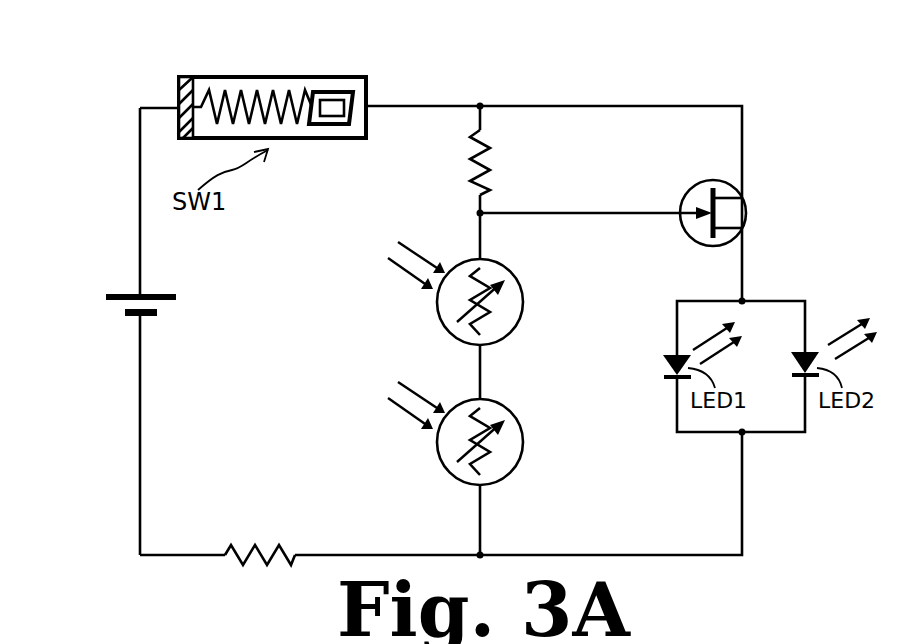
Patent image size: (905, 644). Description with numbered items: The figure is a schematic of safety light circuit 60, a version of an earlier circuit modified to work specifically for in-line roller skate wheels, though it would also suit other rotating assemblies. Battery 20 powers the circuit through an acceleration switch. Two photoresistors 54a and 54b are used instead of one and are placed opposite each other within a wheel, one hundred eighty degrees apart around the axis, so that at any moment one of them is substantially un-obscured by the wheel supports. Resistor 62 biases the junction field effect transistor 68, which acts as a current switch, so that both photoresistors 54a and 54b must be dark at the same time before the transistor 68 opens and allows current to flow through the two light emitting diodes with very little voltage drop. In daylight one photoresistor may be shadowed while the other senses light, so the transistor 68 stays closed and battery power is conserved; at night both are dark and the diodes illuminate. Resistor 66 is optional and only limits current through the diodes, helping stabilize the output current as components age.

The circuit 60 is at (562, 84).
The battery 20 is at (118, 292).
The resistor 62 is at (484, 150).
The junction field effect transistor (JFET) 68 is at (694, 187).
The photoresistor 54a is at (523, 318).
The photoresistor 54b is at (523, 456).
The resistor 66 is at (267, 547).